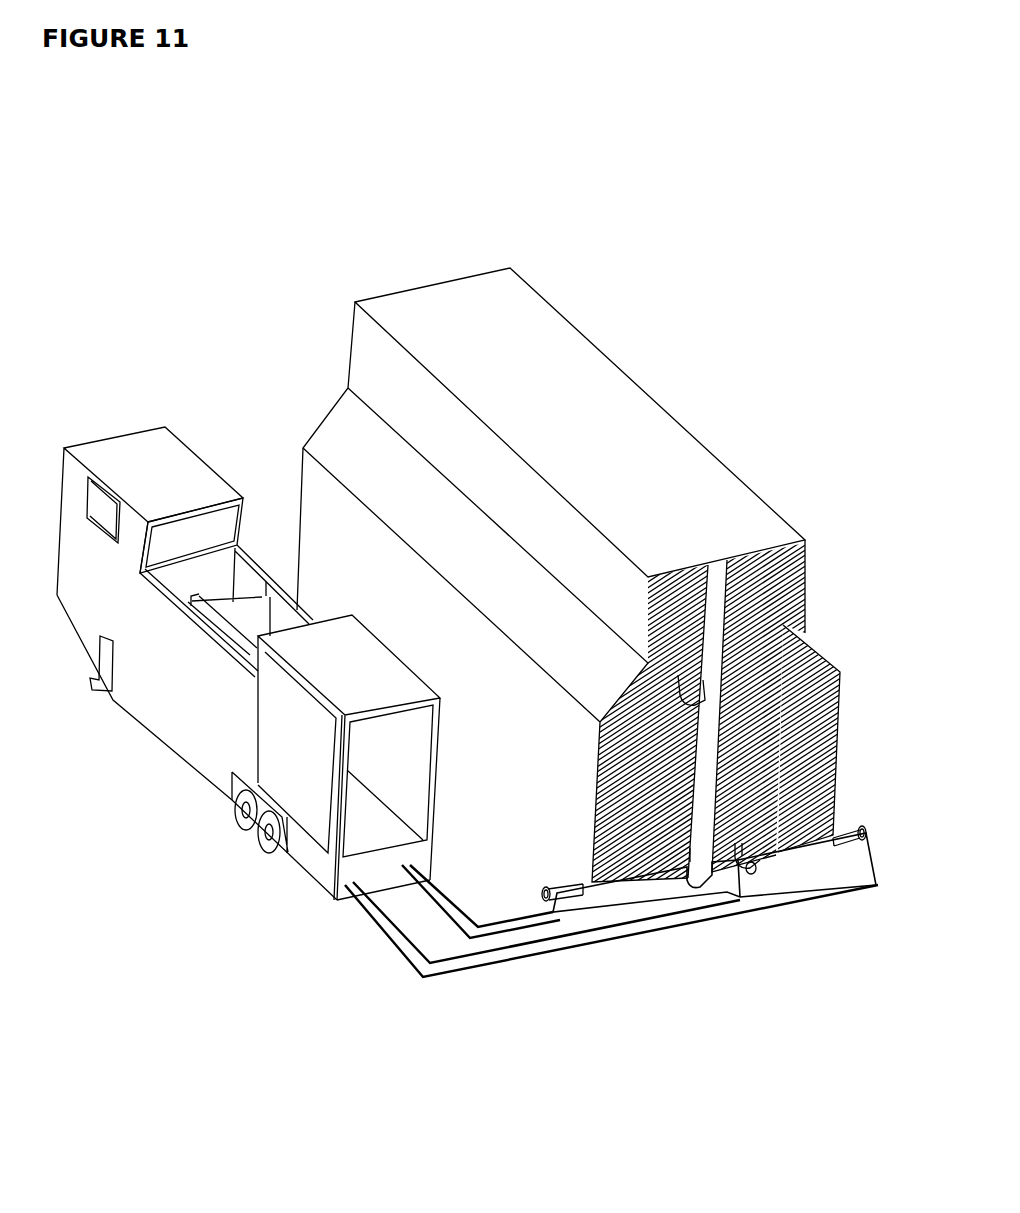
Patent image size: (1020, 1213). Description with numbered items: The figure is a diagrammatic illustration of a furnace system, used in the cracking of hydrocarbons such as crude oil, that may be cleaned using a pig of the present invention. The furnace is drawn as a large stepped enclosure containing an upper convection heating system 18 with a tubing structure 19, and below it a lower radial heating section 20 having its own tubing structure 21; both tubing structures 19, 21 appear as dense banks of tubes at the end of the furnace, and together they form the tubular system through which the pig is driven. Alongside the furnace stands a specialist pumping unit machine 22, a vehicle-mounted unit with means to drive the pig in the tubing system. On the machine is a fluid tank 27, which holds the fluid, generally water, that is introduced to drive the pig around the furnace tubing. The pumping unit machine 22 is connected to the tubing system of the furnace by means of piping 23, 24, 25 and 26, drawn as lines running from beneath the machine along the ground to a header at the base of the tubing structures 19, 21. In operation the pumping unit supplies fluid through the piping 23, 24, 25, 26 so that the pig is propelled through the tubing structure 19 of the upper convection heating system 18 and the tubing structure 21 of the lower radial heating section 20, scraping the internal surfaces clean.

The upper convection heating system 18 is at (537, 290).
The tubing structure 19 is at (713, 585).
The lower radial heating section 20 is at (825, 658).
The tubing structure 21 is at (775, 612).
The specialist pumping unit machine 22 is at (130, 450).
The piping 23 is at (392, 948).
The piping 24 is at (427, 967).
The piping 25 is at (503, 932).
The piping 26 is at (543, 913).
The fluid tank 27 is at (373, 825).